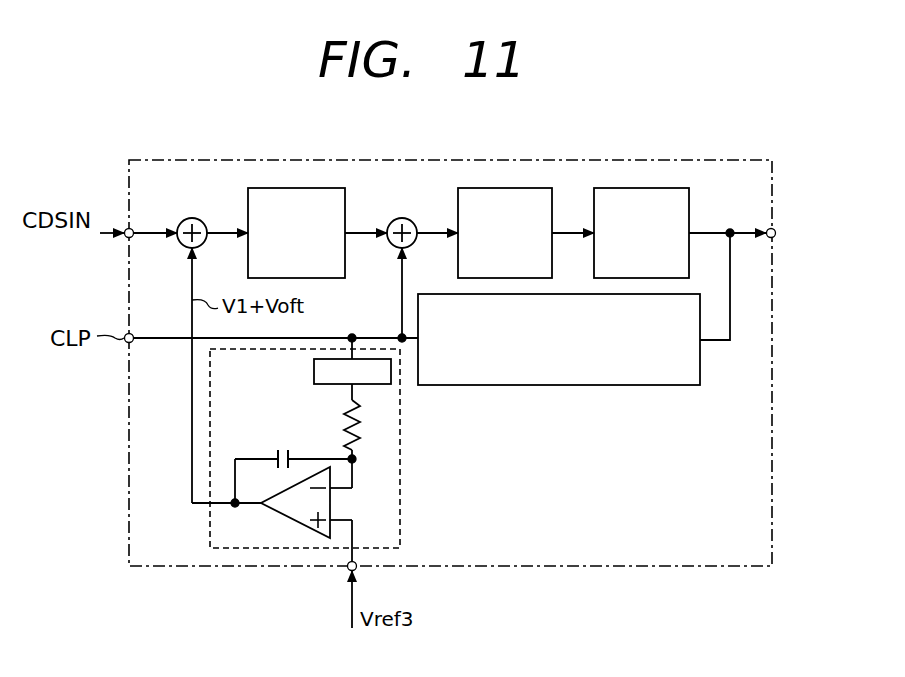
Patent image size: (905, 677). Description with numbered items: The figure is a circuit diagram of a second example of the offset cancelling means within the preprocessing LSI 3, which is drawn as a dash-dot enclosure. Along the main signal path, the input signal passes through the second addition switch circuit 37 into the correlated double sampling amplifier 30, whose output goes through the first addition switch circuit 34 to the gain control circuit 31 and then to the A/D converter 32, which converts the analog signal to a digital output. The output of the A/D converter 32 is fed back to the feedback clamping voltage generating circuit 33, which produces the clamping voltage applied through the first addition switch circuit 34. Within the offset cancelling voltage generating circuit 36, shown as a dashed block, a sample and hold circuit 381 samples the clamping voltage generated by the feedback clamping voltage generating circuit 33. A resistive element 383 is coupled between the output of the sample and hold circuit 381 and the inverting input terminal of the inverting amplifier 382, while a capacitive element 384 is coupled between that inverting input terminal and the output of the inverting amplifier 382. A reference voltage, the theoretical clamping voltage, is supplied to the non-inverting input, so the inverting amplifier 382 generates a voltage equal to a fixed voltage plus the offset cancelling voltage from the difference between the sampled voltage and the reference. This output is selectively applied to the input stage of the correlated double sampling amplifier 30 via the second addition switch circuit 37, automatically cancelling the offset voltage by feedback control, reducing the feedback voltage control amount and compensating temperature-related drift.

The preprocessing LSI 3 is at (740, 160).
The second addition switch circuit 37 is at (192, 218).
The correlated double sampling amplifier 30 is at (316, 188).
The first addition switch circuit 34 is at (402, 218).
The gain control circuit 31 is at (518, 188).
The A/D converter 32 is at (656, 188).
The feedback clamping voltage generating circuit 33 is at (645, 385).
The offset cancelling voltage generating circuit 36 is at (314, 449).
The sample and hold circuit 381 is at (391, 372).
The resistive element 383 is at (360, 424).
The capacitive element 384 is at (283, 449).
The inverting amplifier 382 is at (330, 501).